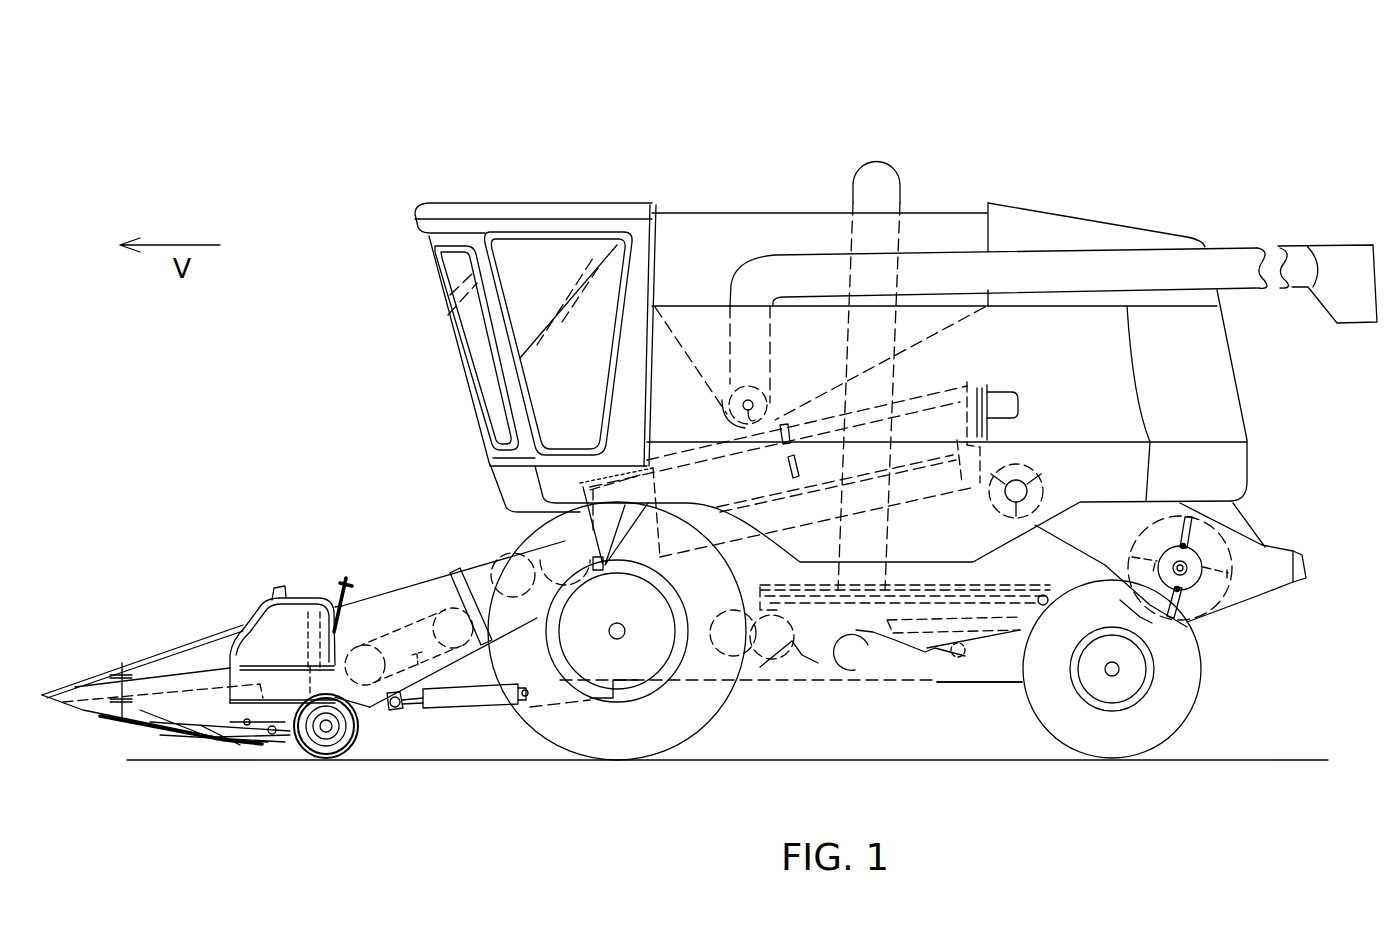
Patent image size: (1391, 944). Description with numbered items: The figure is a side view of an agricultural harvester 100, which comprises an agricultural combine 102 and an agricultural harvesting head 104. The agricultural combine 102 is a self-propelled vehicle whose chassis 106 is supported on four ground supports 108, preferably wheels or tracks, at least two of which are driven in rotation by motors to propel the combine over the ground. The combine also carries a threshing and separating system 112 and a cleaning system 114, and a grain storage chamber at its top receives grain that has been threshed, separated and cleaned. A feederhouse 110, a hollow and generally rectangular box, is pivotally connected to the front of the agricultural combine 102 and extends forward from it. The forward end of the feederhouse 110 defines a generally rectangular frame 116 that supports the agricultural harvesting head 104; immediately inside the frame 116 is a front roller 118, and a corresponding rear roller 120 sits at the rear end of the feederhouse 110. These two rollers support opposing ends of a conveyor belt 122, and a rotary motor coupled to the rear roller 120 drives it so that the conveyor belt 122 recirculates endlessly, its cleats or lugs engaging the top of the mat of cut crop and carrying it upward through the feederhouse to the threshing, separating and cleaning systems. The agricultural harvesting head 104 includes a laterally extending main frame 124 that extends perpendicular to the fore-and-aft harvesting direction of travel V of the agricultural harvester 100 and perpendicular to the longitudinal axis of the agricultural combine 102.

The agricultural harvester 100 is at (406, 64).
The agricultural combine 102 is at (730, 203).
The agricultural harvesting head 104 is at (180, 635).
The chassis 106 is at (943, 684).
The ground supports 108 is at (693, 735).
The feederhouse 110 is at (440, 583).
The threshing and separating system 112 is at (935, 385).
The cleaning system 114 is at (897, 585).
The frame 116 is at (362, 630).
The front roller 118 is at (392, 680).
The rear roller 120 is at (448, 650).
The conveyor belt 122 is at (434, 705).
The main frame 124 is at (303, 569).